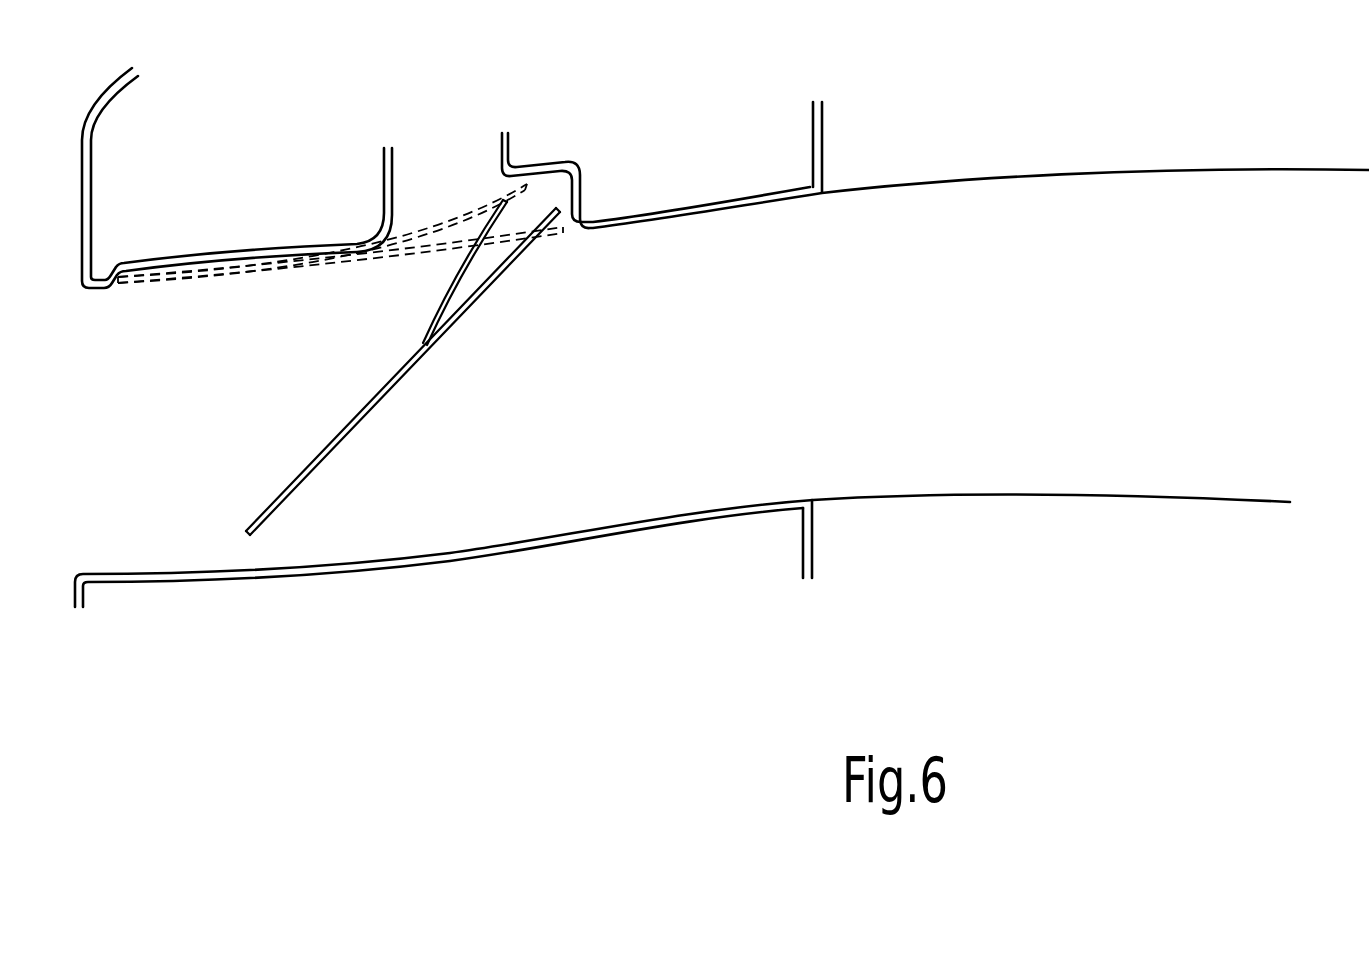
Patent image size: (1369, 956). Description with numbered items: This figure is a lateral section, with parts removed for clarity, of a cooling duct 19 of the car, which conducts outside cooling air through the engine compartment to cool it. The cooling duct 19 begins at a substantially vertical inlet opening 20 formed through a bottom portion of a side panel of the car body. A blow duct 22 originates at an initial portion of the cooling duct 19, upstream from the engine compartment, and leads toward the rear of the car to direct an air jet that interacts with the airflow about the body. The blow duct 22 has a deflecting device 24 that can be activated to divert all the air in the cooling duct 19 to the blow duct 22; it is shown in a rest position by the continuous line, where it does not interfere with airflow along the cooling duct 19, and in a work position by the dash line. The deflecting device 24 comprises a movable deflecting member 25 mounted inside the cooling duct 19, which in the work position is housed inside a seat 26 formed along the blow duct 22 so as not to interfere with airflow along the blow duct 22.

The cooling duct 19 is at (448, 167).
The inlet opening 20 is at (140, 400).
The blow duct 22 is at (628, 433).
The deflecting device 24 is at (207, 452).
The movable deflecting member 25 is at (265, 268).
The seat 26 is at (147, 292).